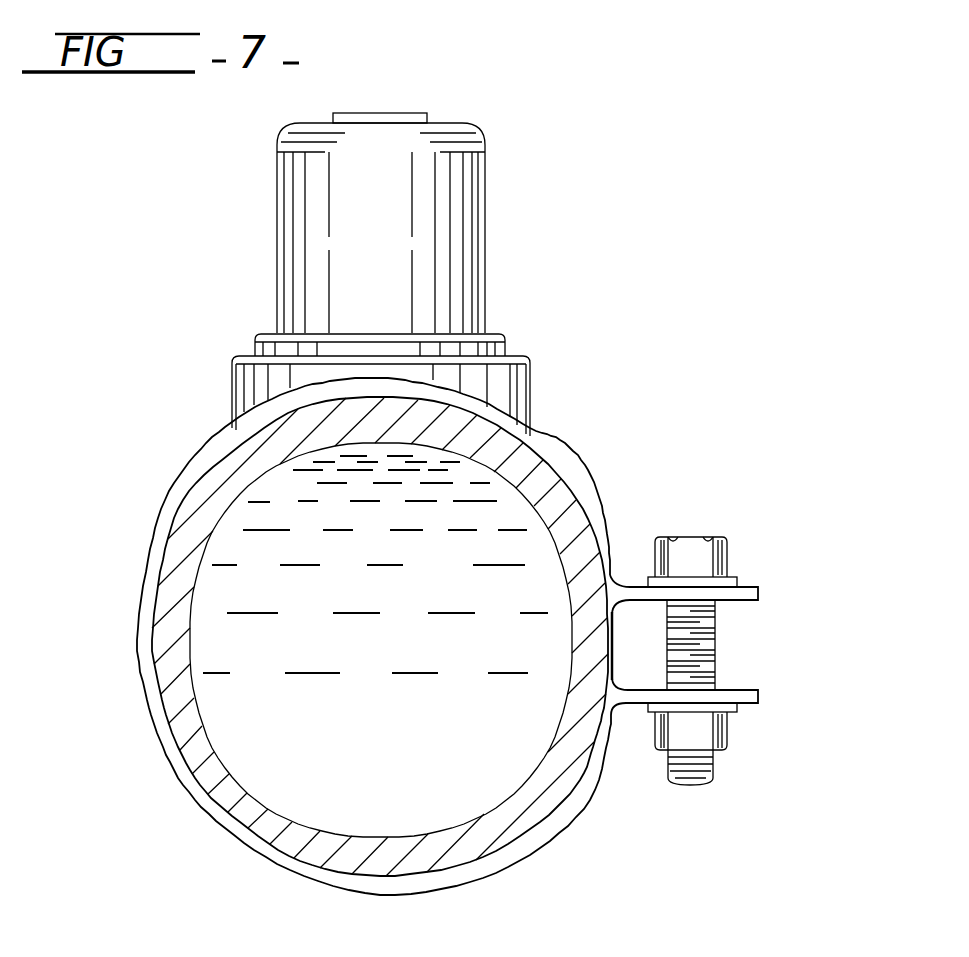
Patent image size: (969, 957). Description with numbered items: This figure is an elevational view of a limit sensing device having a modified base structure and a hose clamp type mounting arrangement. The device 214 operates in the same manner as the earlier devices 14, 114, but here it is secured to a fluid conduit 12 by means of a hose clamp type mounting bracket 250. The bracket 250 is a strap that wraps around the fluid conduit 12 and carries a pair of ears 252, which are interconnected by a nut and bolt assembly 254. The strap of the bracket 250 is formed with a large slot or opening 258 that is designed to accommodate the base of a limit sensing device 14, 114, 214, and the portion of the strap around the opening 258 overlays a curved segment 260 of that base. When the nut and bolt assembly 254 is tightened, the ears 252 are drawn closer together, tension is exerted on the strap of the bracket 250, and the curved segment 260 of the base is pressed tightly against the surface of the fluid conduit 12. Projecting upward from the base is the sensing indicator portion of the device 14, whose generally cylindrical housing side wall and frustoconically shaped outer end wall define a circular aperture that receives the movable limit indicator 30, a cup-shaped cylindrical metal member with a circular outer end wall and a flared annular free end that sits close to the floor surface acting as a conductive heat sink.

The fluid conduit 12 is at (278, 462).
The sensing indicator 14 is at (484, 228).
The limit sensing device 114 is at (484, 228).
The limit sensing device 214 is at (490, 259).
The movable limit indicator 30 is at (395, 108).
The hose clamp type mounting bracket 250 is at (229, 832).
The ears 252 is at (758, 592).
The nut and bolt assembly 254 is at (712, 660).
The slot or opening 258 is at (232, 439).
The curved segment 260 is at (444, 409).